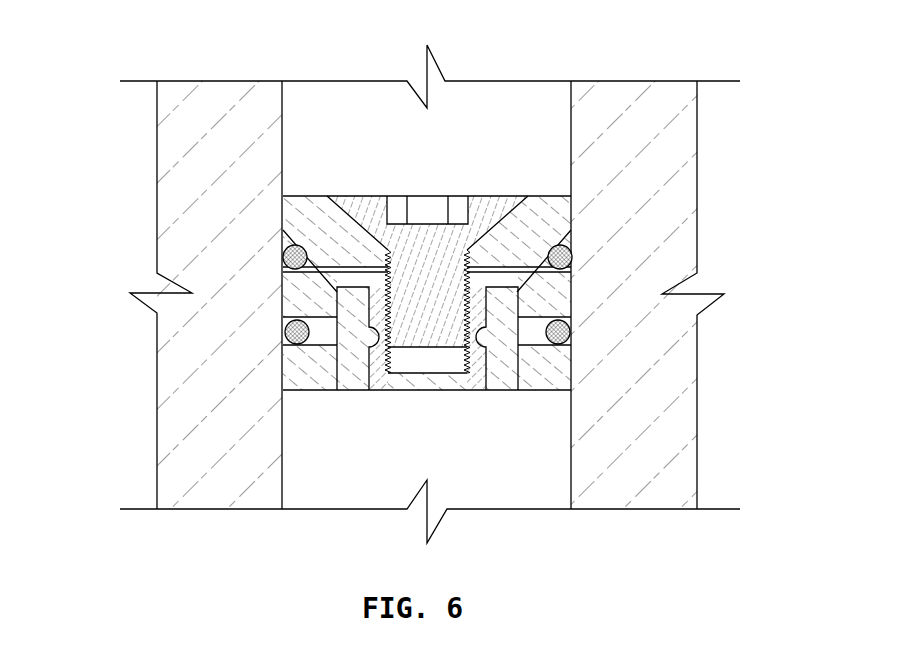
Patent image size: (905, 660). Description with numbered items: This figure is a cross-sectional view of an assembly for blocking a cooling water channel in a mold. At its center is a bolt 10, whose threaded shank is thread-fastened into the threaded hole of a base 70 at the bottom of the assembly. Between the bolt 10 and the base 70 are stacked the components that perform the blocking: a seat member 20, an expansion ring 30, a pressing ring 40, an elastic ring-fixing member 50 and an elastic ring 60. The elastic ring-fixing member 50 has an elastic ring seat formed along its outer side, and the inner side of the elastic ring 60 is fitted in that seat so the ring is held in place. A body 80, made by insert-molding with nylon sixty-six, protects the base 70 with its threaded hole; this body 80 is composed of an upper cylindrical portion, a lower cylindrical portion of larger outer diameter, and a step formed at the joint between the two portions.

The bolt 10 is at (487, 206).
The seat member 20 is at (545, 218).
The expansion ring 30 is at (565, 256).
The pressing ring 40 is at (291, 278).
The elastic ring-fixing member 50 is at (320, 327).
The elastic ring 60 is at (293, 333).
The base 70 is at (383, 381).
The body 80 is at (552, 362).